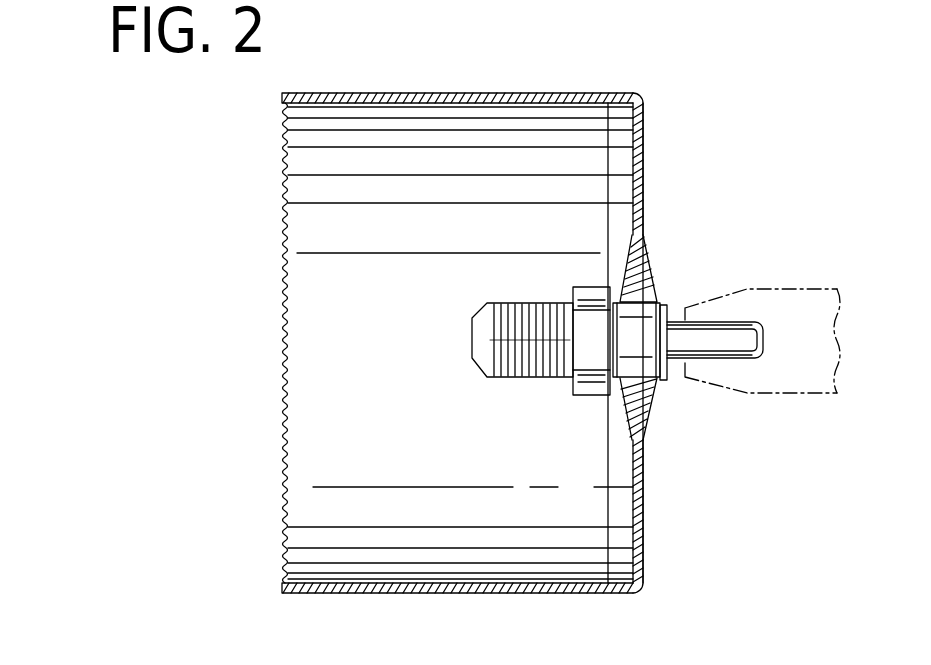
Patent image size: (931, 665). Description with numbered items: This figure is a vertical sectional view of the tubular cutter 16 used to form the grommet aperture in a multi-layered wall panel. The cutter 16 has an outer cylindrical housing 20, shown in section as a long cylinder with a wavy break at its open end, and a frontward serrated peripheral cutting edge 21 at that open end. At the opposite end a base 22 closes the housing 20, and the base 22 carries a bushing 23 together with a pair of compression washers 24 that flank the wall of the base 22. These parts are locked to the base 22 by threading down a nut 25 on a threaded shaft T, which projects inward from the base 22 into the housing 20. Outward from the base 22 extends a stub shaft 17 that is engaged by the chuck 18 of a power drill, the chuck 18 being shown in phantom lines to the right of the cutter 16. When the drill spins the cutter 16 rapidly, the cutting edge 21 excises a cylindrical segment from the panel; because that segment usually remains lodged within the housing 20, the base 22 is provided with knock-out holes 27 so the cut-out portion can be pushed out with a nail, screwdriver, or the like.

The tubular cutter 16 is at (200, 165).
The stub shaft 17 is at (730, 350).
The chuck 18 is at (752, 290).
The outer cylindrical housing 20 is at (452, 93).
The serrated peripheral cutting edge 21 is at (285, 305).
The base 22 is at (645, 150).
The bushing 23 is at (668, 308).
The compression washers 24 is at (627, 442).
The nut 25 is at (590, 396).
The knock-out holes 27 is at (645, 188).
The threaded shaft T is at (500, 305).